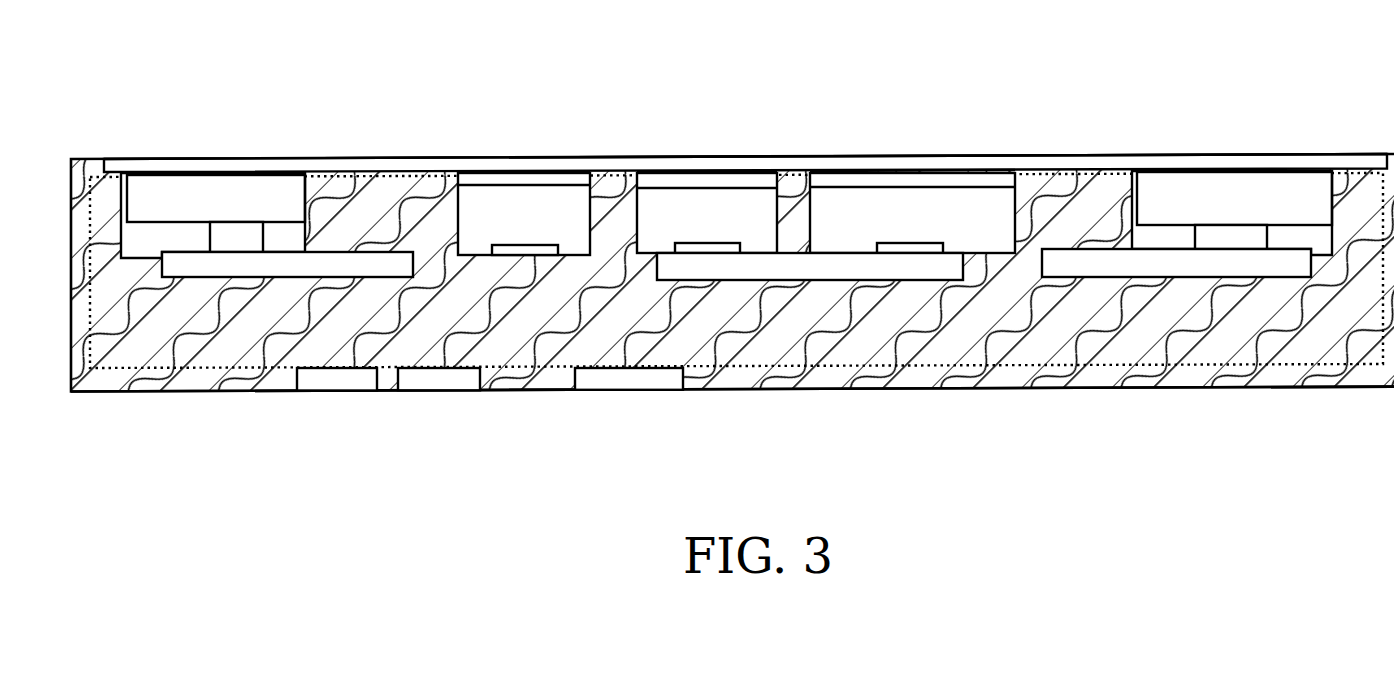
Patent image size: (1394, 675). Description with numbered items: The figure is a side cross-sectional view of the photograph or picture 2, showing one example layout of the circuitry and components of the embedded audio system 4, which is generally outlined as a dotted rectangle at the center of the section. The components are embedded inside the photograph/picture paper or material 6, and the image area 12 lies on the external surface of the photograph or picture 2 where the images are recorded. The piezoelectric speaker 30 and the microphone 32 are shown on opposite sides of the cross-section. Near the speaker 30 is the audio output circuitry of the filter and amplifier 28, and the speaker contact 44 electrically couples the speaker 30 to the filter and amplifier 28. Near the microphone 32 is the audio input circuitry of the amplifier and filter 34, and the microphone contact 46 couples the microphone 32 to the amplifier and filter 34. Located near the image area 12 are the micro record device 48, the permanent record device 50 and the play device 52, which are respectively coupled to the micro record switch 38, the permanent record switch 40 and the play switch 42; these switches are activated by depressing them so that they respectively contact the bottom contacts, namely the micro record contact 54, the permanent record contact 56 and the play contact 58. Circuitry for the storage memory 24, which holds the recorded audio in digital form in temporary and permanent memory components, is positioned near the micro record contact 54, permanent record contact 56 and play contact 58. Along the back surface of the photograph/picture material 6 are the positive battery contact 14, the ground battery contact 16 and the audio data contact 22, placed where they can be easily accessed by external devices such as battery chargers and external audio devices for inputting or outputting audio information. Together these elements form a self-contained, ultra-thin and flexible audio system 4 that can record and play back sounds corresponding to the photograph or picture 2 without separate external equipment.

The photograph or picture 2 is at (834, 151).
The audio system 4 is at (1222, 52).
The photograph/picture paper or material 6 is at (892, 390).
The image area 12 is at (1065, 155).
The positive battery contact 14 is at (335, 392).
The ground battery contact 16 is at (438, 392).
The audio data contact 22 is at (630, 392).
The storage memory 24 is at (785, 270).
The filter and amplifier 28 is at (260, 270).
The piezoelectric speaker 30 is at (194, 209).
The microphone 32 is at (1224, 207).
The amplifier and filter 34 is at (1211, 265).
The micro record switch 38 is at (530, 172).
The permanent record switch 40 is at (703, 170).
The play switch 42 is at (927, 170).
The speaker contact 44 is at (267, 238).
The microphone contact 46 is at (1269, 237).
The micro record device 48 is at (507, 221).
The permanent record device 50 is at (684, 221).
The play device 52 is at (871, 221).
The micro record contact 54 is at (520, 245).
The permanent record contact 56 is at (708, 243).
The play contact 58 is at (925, 243).